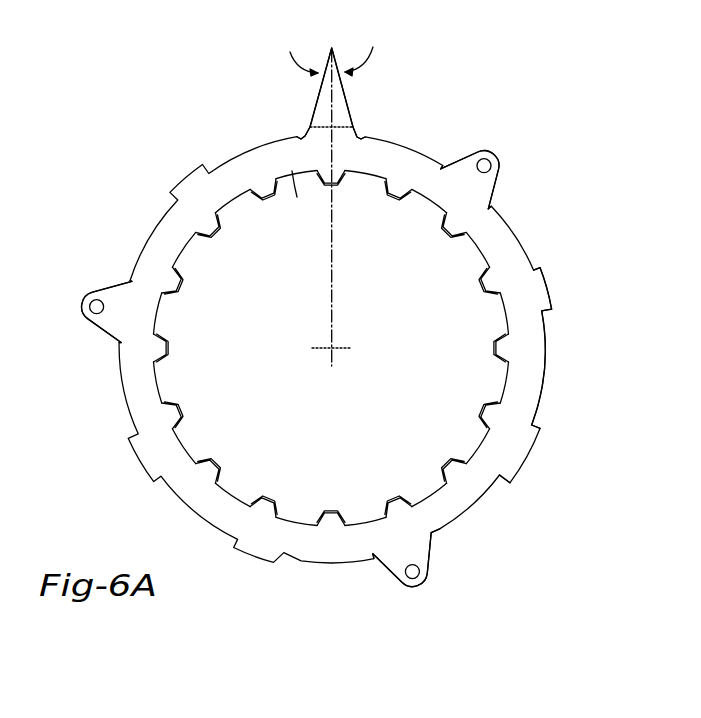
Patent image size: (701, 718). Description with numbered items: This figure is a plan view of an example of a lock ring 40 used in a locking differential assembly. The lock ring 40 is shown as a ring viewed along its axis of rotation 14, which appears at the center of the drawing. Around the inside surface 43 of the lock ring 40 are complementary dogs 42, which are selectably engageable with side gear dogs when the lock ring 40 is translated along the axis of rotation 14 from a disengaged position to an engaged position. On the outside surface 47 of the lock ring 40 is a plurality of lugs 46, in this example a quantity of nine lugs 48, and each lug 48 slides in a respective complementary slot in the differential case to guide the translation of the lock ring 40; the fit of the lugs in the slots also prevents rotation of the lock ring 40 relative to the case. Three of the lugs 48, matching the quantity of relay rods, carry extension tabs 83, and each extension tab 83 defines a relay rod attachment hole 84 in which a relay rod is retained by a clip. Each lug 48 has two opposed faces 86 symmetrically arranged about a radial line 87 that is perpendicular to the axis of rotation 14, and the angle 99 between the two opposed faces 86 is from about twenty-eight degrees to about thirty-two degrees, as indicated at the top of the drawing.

The axis of rotation 14 is at (333, 350).
The lock ring 40 is at (542, 186).
The complementary dogs 42 is at (214, 238).
The inside surface 43 is at (295, 198).
The plurality of lugs 46 is at (549, 290).
The outside surface 47 is at (548, 370).
The lug 48 is at (337, 126).
The extension tabs 83 is at (479, 151).
The relay rod attachment hole 84 is at (491, 166).
The opposed faces 86 is at (304, 131).
The radial line 87 is at (320, 85).
The angle 99 is at (290, 52).